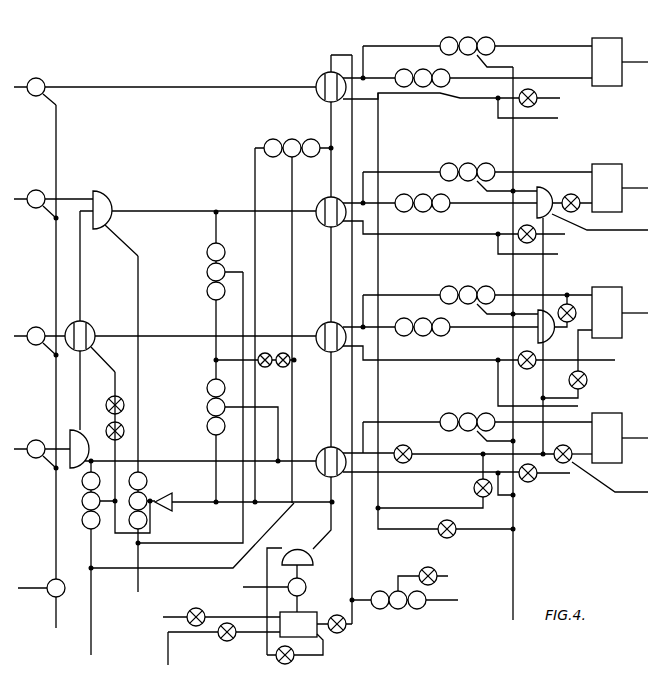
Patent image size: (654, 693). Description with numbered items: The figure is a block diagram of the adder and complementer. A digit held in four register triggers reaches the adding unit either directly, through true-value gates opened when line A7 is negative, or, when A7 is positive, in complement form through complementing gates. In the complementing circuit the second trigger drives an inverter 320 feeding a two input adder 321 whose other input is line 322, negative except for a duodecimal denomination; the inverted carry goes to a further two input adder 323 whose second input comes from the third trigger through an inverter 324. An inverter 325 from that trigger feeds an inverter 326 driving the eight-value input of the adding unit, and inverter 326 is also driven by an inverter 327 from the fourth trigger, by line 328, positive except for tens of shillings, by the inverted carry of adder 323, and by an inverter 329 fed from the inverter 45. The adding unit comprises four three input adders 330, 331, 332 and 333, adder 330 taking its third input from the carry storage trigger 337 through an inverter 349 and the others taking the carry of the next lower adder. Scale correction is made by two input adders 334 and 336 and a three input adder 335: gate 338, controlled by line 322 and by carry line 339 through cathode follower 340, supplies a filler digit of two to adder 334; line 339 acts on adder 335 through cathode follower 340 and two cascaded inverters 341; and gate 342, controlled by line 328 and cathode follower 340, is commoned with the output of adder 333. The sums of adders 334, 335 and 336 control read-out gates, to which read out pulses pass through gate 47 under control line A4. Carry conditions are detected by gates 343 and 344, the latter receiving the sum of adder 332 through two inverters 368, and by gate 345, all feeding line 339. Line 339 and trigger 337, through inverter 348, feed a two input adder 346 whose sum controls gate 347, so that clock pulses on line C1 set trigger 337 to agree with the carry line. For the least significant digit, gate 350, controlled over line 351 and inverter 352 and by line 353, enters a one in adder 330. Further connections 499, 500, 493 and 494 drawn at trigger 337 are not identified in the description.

The gate 47 is at (64, 595).
The control line A4 is at (36, 589).
The control line A7 is at (517, 597).
The clock pulse line C1 is at (258, 590).
The two input adder 334 is at (116, 185).
The three input adder 335 is at (96, 319).
The two input adder 336 is at (84, 429).
The inverters 341 is at (124, 431).
The gate 342 is at (82, 521).
The gate 338 is at (148, 496).
The cathode follower 340 is at (166, 511).
The carry line 339 is at (207, 507).
The gate 343 is at (205, 272).
The gate 344 is at (206, 392).
The inverters 368 is at (281, 368).
The gate 345 is at (290, 139).
The three input adder 330 is at (318, 77).
The three input adder 331 is at (326, 200).
The three input adder 332 is at (326, 325).
The three input adder 333 is at (326, 450).
The two input adder 346 is at (314, 555).
The gate 347 is at (307, 588).
The carry storage trigger 337 is at (320, 637).
The inverter 348 is at (279, 663).
The inverter 349 is at (344, 629).
The gate 350 is at (404, 608).
The line 351 is at (448, 578).
The inverter 352 is at (421, 570).
The line 353 is at (455, 601).
The inverter 499 is at (202, 598).
The input line 500 is at (163, 617).
The inverter 493 is at (225, 641).
The input line 494 is at (167, 662).
The line 322 is at (138, 592).
The line 328 is at (91, 655).
The inverter 45 is at (438, 528).
The inverter 320 is at (568, 194).
The two input adder 321 is at (537, 185).
The two input adder 323 is at (542, 310).
The inverter 324 is at (576, 306).
The inverter 325 is at (587, 380).
The inverter 326 is at (409, 449).
The inverter 327 is at (565, 441).
The inverter 329 is at (474, 490).